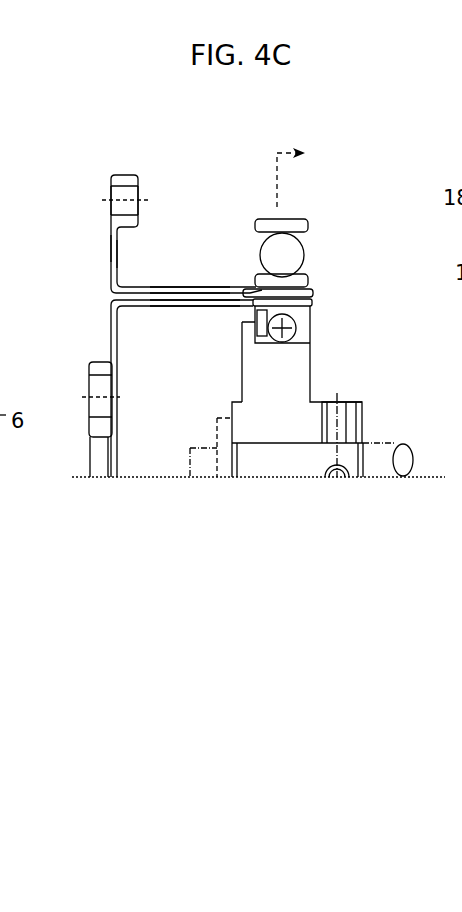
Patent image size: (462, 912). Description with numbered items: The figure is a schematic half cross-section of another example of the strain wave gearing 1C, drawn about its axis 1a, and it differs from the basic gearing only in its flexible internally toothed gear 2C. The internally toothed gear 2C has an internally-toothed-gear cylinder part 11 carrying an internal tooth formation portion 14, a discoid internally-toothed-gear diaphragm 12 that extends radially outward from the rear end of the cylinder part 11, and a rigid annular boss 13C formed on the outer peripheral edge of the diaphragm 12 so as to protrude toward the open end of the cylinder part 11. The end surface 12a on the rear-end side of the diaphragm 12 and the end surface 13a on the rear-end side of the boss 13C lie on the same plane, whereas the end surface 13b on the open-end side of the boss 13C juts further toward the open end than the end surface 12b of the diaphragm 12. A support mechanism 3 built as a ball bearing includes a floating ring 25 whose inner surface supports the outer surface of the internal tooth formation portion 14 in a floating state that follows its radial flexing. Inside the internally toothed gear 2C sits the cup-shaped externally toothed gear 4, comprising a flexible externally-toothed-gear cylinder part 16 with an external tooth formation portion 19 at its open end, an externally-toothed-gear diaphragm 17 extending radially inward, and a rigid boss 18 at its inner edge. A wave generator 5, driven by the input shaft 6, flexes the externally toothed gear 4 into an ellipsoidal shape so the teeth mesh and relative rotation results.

The strain wave gearing 1C is at (340, 205).
The axis 1a is at (387, 481).
The internally toothed gear 2C is at (326, 290).
The support mechanism 3 is at (313, 257).
The externally toothed gear 4 is at (317, 306).
The wave generator 5 is at (323, 380).
The input shaft 6 is at (386, 441).
The internally-toothed-gear cylinder part 11 is at (197, 287).
The internally-toothed-gear diaphragm 12 is at (134, 218).
The end surface 12a is at (109, 248).
The end surface 12b is at (117, 262).
The boss 13C is at (110, 183).
The end surface 13a is at (110, 210).
The end surface 13b is at (137, 209).
The internal tooth formation portion 14 is at (252, 302).
The externally-toothed-gear cylinder part 16 is at (162, 307).
The externally-toothed-gear diaphragm 17 is at (110, 340).
The boss 18 is at (89, 405).
The external tooth formation portion 19 is at (252, 330).
The floating ring 25 is at (253, 276).